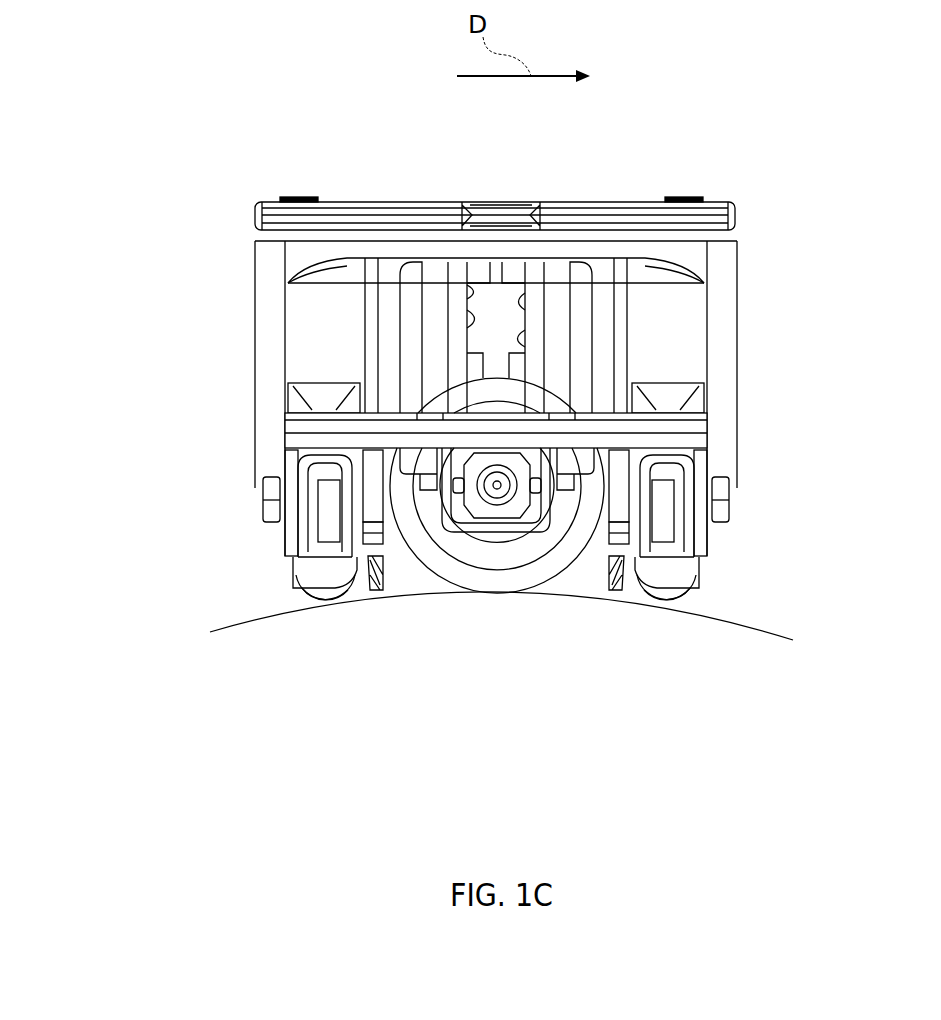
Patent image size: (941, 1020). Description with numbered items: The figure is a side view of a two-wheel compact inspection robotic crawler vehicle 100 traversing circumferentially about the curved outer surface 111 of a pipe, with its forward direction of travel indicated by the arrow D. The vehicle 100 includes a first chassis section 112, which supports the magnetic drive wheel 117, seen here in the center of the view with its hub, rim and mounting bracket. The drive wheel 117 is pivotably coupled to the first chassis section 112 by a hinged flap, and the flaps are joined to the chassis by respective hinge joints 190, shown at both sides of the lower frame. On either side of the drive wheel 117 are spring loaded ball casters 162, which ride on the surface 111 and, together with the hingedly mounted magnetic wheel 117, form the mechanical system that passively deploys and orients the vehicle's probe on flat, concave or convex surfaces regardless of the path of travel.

The robotic crawler vehicle 100 is at (488, 368).
The curved surface 111 is at (231, 622).
The first chassis section 112 is at (413, 205).
The magnetic drive wheel 117 is at (518, 575).
The spring loaded ball caster 162 is at (343, 593).
The hinge joint 190 is at (248, 498).